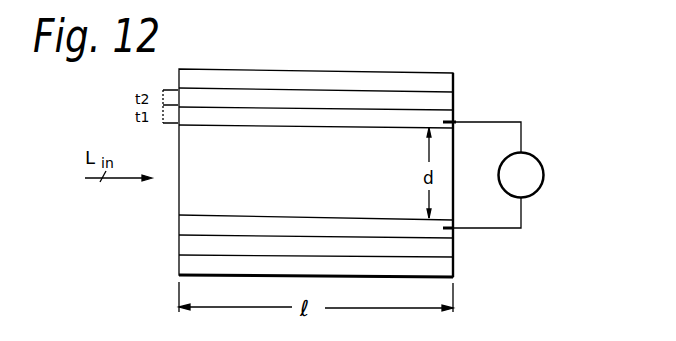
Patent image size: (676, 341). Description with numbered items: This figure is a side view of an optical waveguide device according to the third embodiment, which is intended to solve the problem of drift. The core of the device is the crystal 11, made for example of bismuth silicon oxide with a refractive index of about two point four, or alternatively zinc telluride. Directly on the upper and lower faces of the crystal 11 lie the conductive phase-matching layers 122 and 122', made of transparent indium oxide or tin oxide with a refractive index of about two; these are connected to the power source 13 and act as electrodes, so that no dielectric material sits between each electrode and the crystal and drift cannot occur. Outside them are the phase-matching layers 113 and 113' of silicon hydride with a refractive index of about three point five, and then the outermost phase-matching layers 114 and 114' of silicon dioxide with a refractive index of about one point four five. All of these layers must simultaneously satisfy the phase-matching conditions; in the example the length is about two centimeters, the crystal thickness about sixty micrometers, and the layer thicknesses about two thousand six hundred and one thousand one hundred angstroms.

The crystal 11 is at (179, 161).
The power source 13 is at (544, 174).
The phase-matching layer 113 is at (342, 98).
The phase-matching layer 114 is at (342, 70).
The conductive phase-matching layer 122 is at (482, 137).
The phase-matching layer 113' is at (343, 250).
The phase-matching layer 114' is at (343, 257).
The conductive phase-matching layer 122' is at (482, 213).